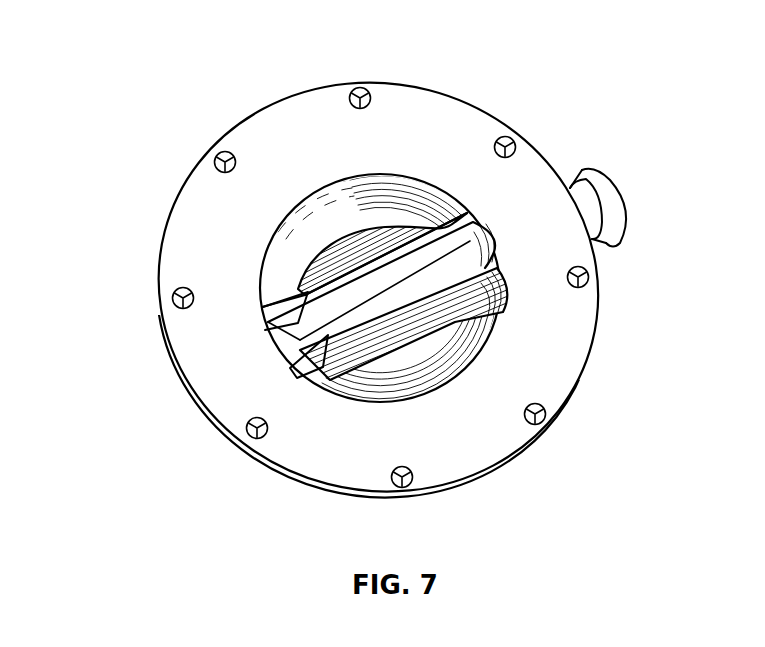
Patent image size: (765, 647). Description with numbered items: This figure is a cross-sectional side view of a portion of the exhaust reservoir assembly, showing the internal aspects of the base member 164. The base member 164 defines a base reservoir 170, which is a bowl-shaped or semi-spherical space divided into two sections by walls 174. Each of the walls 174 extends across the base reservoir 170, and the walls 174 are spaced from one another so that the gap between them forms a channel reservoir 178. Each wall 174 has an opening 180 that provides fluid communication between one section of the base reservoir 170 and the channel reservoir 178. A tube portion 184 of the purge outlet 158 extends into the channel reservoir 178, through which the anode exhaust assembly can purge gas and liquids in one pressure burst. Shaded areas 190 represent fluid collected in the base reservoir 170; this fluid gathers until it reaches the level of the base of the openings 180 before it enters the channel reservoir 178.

The purge outlet 158 is at (598, 177).
The base member 164 is at (347, 80).
The base reservoir 170 is at (360, 250).
The walls 174 is at (381, 266).
The channel reservoir 178 is at (286, 338).
The opening 180 is at (298, 291).
The tube portion 184 is at (433, 266).
The shaded areas 190 is at (302, 210).